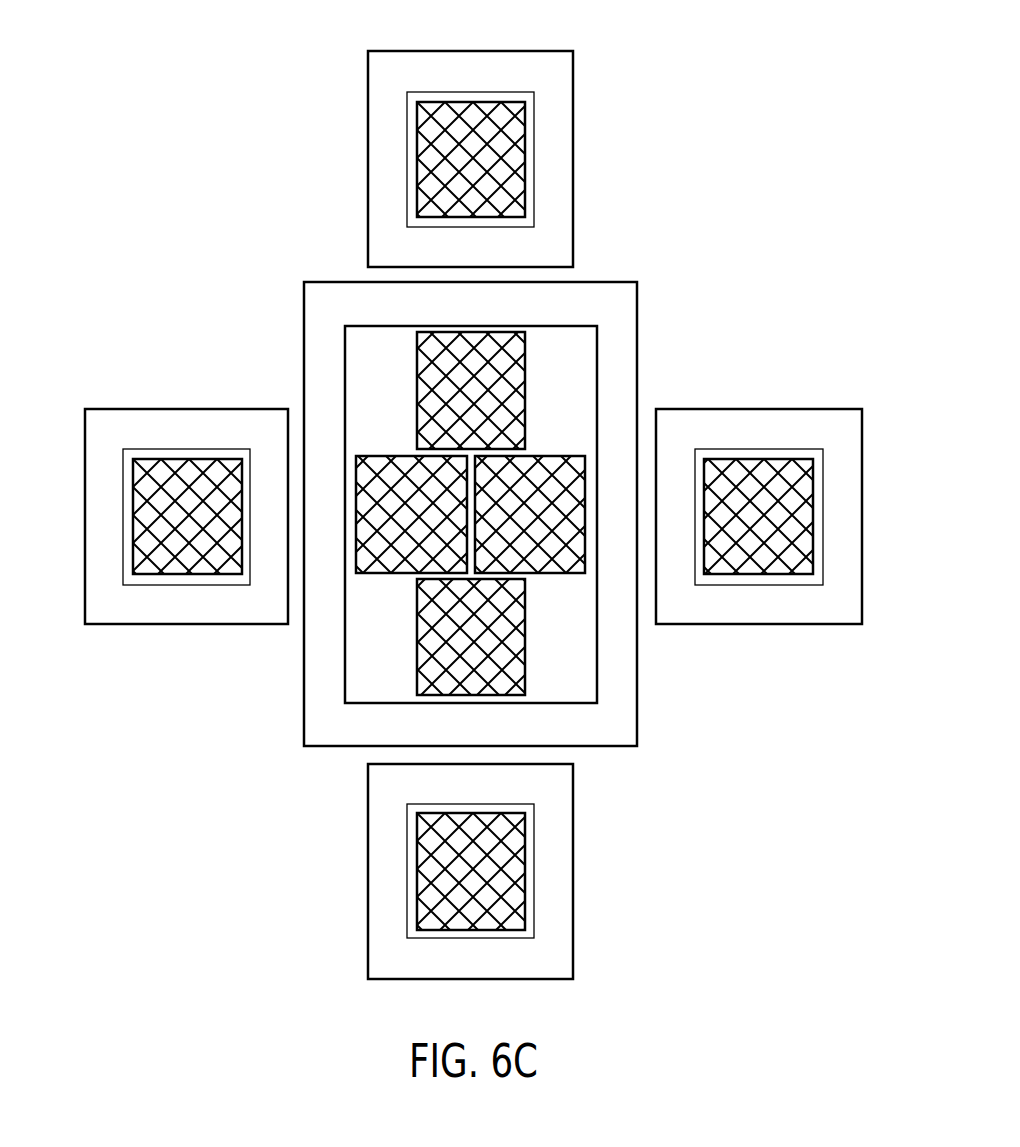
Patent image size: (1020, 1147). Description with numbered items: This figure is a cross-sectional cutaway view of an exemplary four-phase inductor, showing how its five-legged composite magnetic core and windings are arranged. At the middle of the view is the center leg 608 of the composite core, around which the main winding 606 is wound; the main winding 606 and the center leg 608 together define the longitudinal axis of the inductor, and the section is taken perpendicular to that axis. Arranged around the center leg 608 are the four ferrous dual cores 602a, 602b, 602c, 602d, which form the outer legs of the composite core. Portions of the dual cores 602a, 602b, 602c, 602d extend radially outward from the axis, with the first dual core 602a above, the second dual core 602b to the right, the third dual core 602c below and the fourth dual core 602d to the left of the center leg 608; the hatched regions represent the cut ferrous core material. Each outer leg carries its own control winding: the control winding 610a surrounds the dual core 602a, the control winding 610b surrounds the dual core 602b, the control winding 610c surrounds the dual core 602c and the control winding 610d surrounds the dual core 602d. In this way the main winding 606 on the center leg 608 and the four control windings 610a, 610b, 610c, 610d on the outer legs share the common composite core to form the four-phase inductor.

The ferrous dual core 602a is at (487, 108).
The ferrous dual core 602b is at (763, 467).
The ferrous dual core 602c is at (513, 848).
The ferrous dual core 602d is at (185, 466).
The main winding 606 is at (623, 358).
The center leg 608 is at (572, 354).
The control winding 610a is at (557, 125).
The control winding 610b is at (845, 525).
The control winding 610c is at (562, 900).
The control winding 610d is at (100, 481).